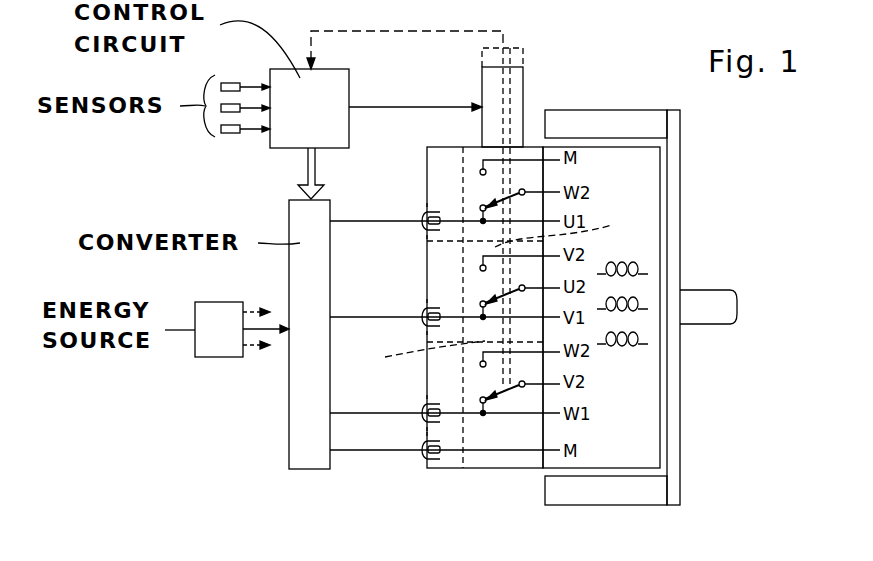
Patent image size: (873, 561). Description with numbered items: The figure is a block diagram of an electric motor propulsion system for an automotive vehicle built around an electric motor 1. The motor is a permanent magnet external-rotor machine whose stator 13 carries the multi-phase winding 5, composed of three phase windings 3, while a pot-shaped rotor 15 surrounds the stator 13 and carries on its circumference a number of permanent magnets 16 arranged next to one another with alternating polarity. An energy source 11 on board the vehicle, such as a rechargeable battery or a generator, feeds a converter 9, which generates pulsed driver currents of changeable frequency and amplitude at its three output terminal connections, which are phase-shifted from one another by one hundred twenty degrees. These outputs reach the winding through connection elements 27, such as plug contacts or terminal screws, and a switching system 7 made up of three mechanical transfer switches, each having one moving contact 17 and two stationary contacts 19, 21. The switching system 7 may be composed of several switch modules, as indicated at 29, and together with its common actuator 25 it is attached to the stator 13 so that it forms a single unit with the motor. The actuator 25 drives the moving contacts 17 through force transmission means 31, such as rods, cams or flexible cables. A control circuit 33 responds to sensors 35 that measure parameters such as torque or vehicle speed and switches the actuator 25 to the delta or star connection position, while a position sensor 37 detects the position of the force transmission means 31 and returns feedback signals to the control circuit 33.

The electric motor 1 is at (715, 148).
The phase windings 3 is at (640, 302).
The multi-phase winding 5 is at (655, 292).
The switching system 7 is at (483, 478).
The converter 9 is at (298, 440).
The energy source 11 is at (215, 357).
The stator 13 is at (648, 425).
The rotor 15 is at (683, 173).
The permanent magnets 16 is at (603, 120).
The moving contacts 17 is at (520, 205).
The stationary contact 19 is at (480, 210).
The stationary contact 21 is at (481, 168).
The actuator 25 is at (515, 85).
The connection elements 27 is at (418, 216).
The switch modules 29 is at (496, 296).
The force transmission means 31 is at (508, 118).
The control circuit 33 is at (285, 85).
The sensors 35 is at (222, 142).
The position sensor 37 is at (483, 52).